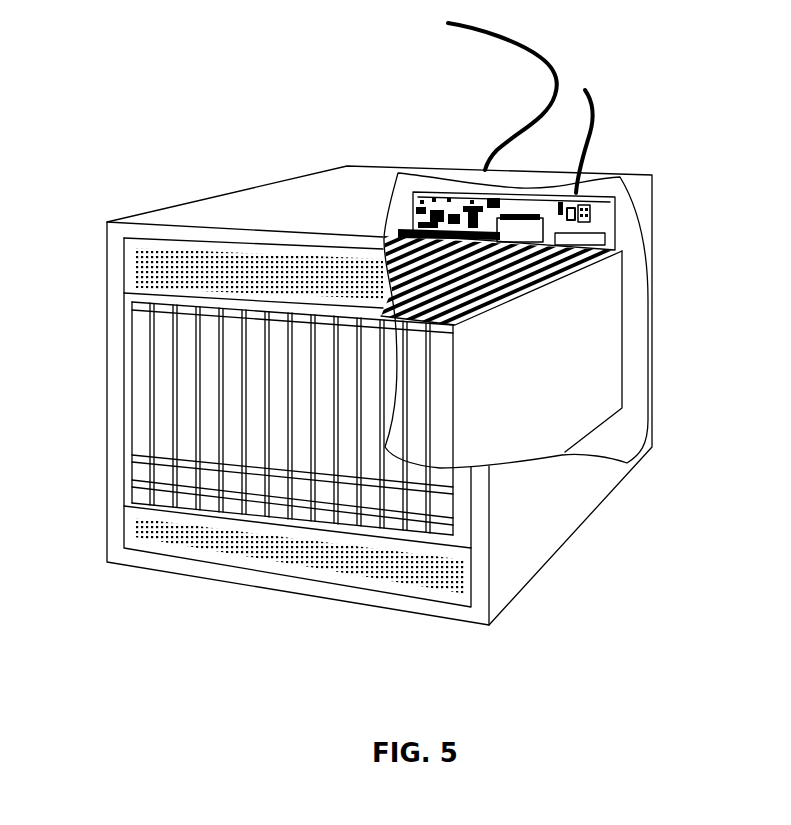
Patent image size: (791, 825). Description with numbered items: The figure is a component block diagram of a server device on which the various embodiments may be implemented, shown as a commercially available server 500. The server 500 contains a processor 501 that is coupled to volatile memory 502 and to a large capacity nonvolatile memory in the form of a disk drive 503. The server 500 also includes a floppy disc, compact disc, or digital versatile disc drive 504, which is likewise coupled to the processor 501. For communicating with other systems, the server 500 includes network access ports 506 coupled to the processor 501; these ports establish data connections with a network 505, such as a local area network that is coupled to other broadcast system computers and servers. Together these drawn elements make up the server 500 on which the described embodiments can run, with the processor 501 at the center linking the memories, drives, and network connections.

The server 500 is at (273, 180).
The processor 501 is at (412, 232).
The volatile memory 502 is at (596, 240).
The disk drive 503 is at (187, 363).
The disc drive 504 is at (160, 393).
The network 505 is at (558, 78).
The network access ports 506 is at (527, 235).